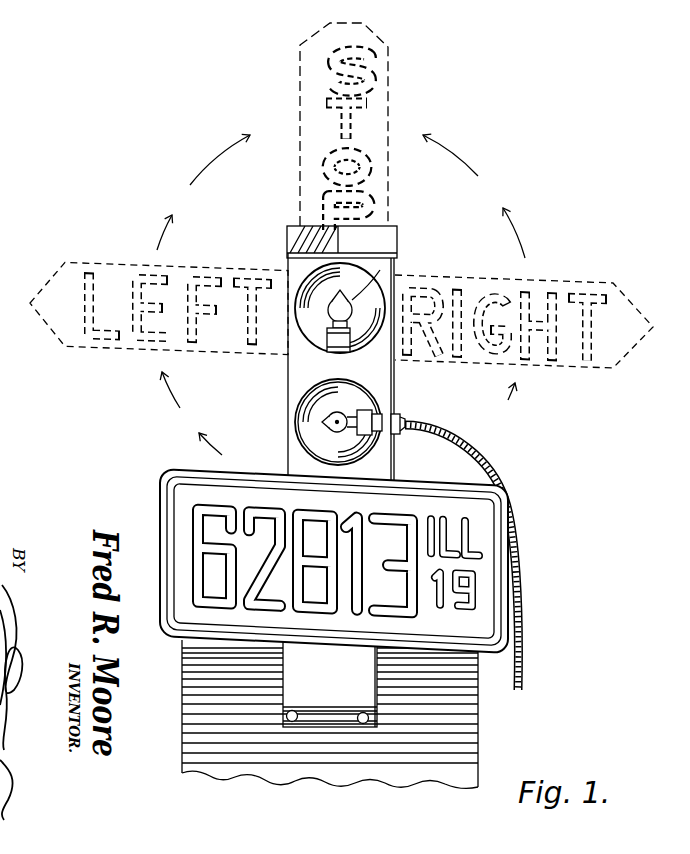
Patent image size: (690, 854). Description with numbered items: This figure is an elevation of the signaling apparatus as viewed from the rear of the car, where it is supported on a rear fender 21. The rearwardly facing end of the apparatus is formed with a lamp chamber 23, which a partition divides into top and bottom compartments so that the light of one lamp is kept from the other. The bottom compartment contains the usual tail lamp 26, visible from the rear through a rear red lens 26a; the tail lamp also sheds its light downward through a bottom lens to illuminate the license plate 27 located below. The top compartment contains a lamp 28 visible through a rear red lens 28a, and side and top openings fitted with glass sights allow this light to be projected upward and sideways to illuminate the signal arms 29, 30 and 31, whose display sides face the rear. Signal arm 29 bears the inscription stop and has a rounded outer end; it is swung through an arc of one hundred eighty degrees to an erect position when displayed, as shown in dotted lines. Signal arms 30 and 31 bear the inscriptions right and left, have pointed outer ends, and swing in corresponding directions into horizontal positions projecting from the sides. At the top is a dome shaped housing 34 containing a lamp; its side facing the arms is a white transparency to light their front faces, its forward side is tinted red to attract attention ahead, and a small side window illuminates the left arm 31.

The rear fender 21 is at (480, 741).
The lamp chamber 23 is at (395, 380).
The tail lamp 26 is at (329, 432).
The rear red lens 26a is at (321, 413).
The license plate 27 is at (487, 515).
The lamp 28 is at (395, 272).
The rear red lens 28a is at (320, 330).
The signal arm 29 is at (391, 81).
The signal arm 30 is at (596, 283).
The signal arm 31 is at (200, 268).
The dome shaped housing 34 is at (377, 230).